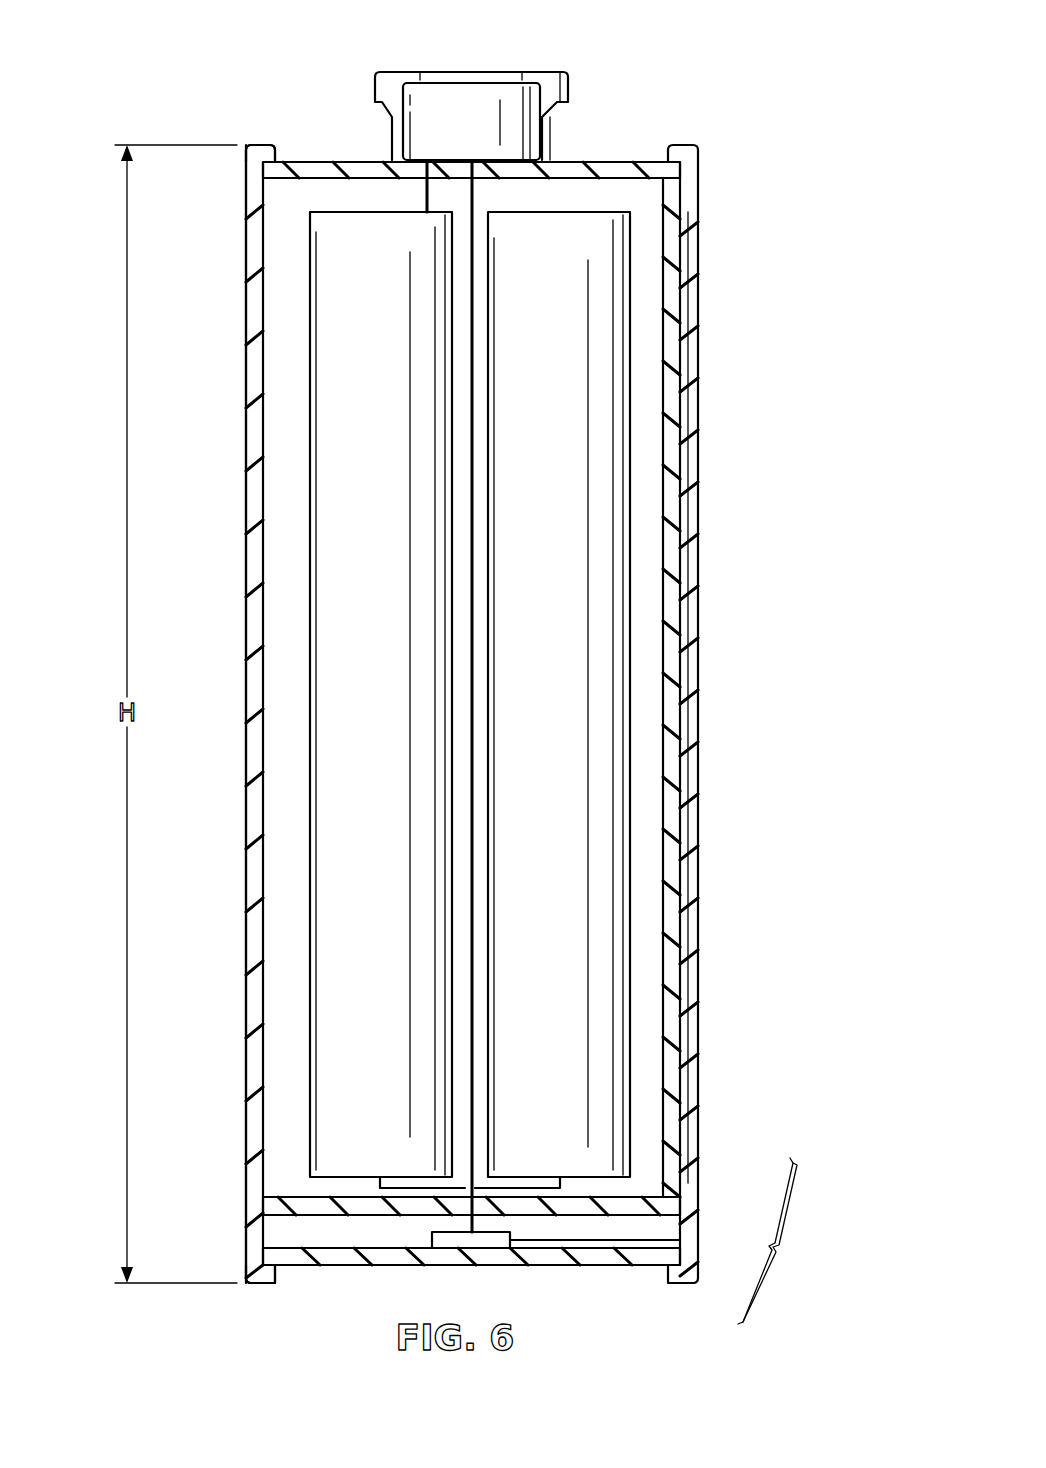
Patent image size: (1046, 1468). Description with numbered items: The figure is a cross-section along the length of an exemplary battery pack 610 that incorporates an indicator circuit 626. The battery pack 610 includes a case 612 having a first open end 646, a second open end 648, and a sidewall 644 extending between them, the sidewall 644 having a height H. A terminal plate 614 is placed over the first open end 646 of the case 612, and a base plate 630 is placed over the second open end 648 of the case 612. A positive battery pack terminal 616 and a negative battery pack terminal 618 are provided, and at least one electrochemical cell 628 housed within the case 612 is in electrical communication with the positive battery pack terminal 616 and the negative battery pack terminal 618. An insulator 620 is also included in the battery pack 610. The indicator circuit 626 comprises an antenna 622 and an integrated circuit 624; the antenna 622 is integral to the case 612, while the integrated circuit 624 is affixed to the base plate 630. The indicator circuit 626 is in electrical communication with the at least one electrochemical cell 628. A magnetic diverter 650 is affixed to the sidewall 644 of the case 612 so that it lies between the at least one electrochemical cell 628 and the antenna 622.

The battery pack 610 is at (496, 678).
The case 612 is at (246, 826).
The terminal plate 614 is at (320, 162).
The positive battery pack terminal 616 is at (437, 82).
The negative battery pack terminal 618 is at (547, 68).
The insulator 620 is at (300, 1197).
The antenna 622 is at (692, 1160).
The integrated circuit 624 is at (487, 1242).
The indicator circuit 626 is at (778, 1247).
The electrochemical cell 628 is at (360, 704).
The base plate 630 is at (362, 1266).
The sidewall 644 is at (228, 756).
The first open end 646 is at (242, 127).
The second open end 648 is at (268, 1296).
The magnetic diverter 650 is at (668, 545).